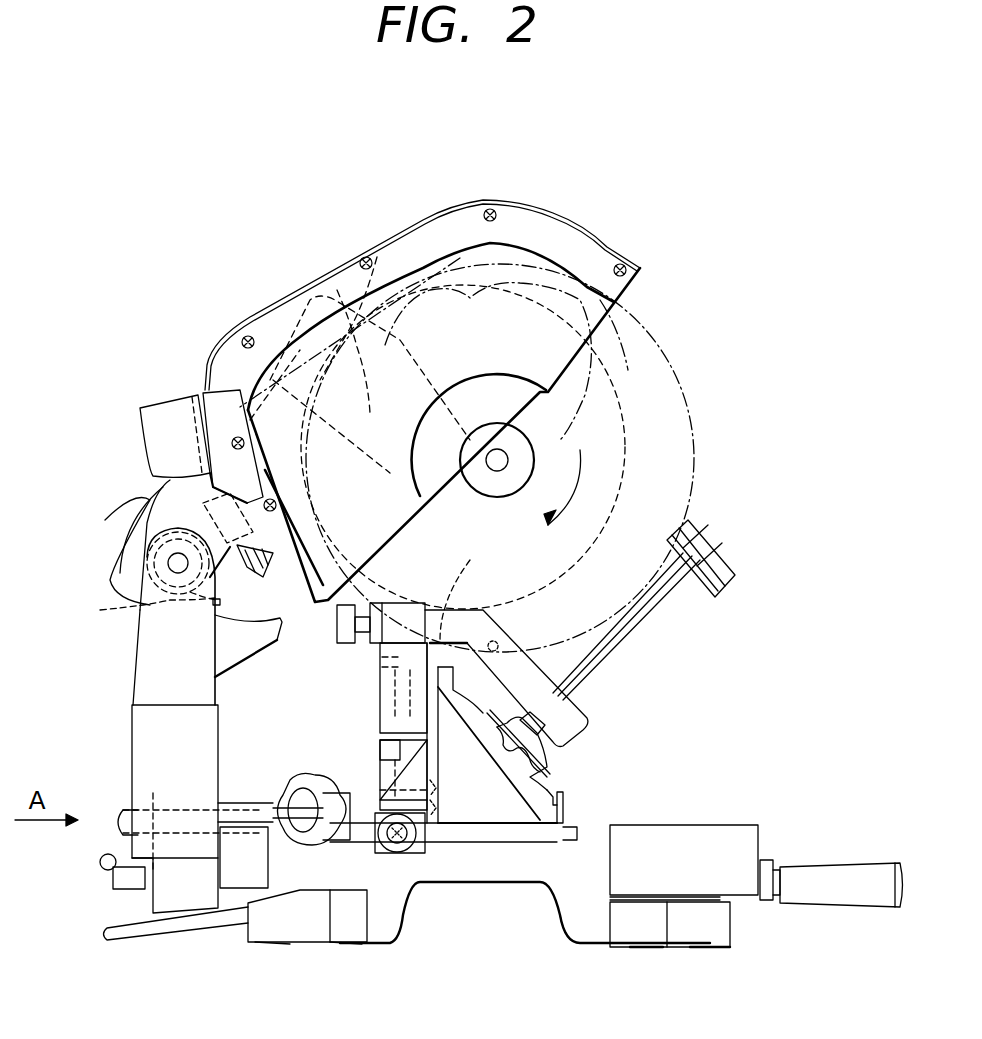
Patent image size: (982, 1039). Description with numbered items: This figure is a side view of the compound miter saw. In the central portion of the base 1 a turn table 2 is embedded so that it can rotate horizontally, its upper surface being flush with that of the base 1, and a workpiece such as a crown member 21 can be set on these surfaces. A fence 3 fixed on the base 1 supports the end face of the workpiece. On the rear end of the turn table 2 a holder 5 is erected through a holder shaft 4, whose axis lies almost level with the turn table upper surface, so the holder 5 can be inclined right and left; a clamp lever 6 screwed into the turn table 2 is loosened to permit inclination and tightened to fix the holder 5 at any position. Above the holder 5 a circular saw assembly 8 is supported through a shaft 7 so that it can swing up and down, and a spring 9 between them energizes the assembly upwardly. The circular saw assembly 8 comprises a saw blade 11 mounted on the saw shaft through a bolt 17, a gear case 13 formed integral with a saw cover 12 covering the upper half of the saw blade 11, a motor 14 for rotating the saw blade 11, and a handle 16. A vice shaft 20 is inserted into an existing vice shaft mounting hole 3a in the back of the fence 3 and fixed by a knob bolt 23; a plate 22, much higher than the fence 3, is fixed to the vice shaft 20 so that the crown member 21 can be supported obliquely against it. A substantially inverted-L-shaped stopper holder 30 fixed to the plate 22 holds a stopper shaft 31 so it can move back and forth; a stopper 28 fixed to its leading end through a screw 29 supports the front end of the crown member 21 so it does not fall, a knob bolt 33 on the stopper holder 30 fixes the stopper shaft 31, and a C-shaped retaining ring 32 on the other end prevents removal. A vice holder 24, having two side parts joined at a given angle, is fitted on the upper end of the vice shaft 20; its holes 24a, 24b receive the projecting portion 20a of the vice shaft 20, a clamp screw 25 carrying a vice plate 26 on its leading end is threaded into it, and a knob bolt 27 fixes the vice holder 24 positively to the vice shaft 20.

The base 1 is at (450, 882).
The turn table 2 is at (708, 825).
The fence 3 is at (378, 770).
The vice shaft mounting hole 3a is at (380, 742).
The holder shaft 4 is at (165, 788).
The holder 5 is at (125, 685).
The clamp lever 6 is at (105, 878).
The shaft 7 is at (175, 560).
The circular saw assembly 8 is at (420, 222).
The spring 9 is at (145, 562).
The saw blade 11 is at (694, 460).
The saw cover 12 is at (360, 320).
The gear case 13 is at (155, 492).
The motor 14 is at (290, 323).
The handle 16 is at (545, 232).
The bolt 17 is at (500, 457).
The vice shaft 20 is at (380, 680).
The projecting portion 20a is at (385, 590).
The crown member 21 is at (570, 793).
The plate 22 is at (443, 780).
The knob bolt 23 is at (298, 790).
The vice holder 24 is at (485, 607).
The hole 24a is at (466, 587).
The hole 24b is at (505, 650).
The clamp screw 25 is at (640, 675).
The vice plate 26 is at (548, 752).
The knob bolt 27 is at (336, 625).
The stopper 28 is at (565, 890).
The screw 29 is at (585, 895).
The stopper holder 30 is at (383, 855).
The stopper shaft 31 is at (345, 890).
The C-shaped retaining ring 32 is at (300, 892).
The knob bolt 33 is at (397, 855).